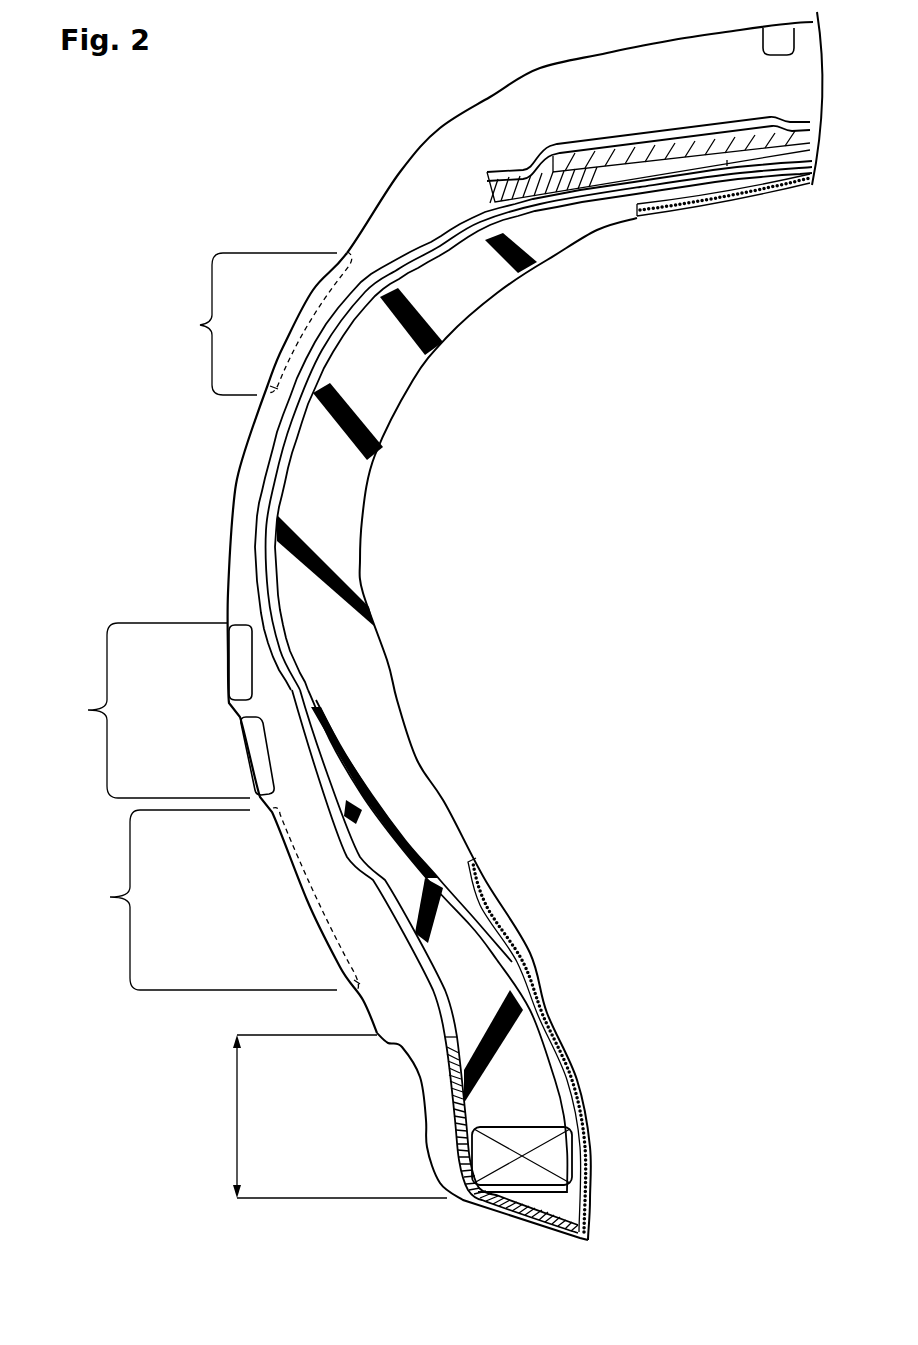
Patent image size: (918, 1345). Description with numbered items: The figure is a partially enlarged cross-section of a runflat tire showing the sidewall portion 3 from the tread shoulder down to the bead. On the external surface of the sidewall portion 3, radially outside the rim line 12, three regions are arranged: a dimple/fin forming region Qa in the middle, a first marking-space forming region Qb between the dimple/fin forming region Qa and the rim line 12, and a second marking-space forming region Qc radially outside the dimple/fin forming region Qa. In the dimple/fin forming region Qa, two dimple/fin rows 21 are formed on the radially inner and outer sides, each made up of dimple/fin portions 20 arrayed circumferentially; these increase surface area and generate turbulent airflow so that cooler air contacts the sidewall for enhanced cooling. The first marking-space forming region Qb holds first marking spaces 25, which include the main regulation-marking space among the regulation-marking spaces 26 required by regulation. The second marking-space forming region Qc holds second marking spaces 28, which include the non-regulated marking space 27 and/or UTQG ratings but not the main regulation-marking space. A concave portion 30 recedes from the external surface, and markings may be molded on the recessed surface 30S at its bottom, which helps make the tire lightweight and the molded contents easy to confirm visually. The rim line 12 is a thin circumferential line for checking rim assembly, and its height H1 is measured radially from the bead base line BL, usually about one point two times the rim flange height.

The sidewall portion 3 is at (240, 513).
The rim line 12 is at (377, 1037).
The dimple/fin portions 20 is at (251, 710).
The dimple/fin rows 21 is at (242, 660).
The first marking spaces 25 is at (303, 903).
The regulation-marking spaces 26 is at (315, 899).
The non-regulated marking space 27 is at (310, 322).
The second marking spaces 28 is at (317, 290).
The concave portion 30 is at (287, 363).
The recessed surface 30S is at (315, 685).
The dimple/fin forming region Qa is at (147, 710).
The first marking-space forming region Qb is at (198, 900).
The second marking-space forming region Qc is at (244, 324).
The height H1 is at (238, 1118).
The bead base line BL is at (340, 1200).